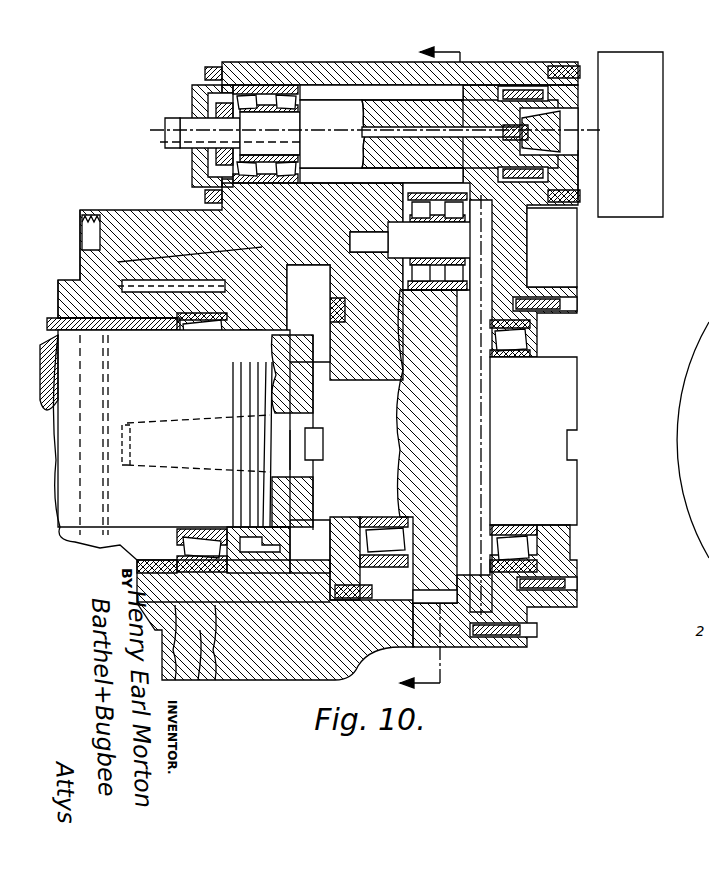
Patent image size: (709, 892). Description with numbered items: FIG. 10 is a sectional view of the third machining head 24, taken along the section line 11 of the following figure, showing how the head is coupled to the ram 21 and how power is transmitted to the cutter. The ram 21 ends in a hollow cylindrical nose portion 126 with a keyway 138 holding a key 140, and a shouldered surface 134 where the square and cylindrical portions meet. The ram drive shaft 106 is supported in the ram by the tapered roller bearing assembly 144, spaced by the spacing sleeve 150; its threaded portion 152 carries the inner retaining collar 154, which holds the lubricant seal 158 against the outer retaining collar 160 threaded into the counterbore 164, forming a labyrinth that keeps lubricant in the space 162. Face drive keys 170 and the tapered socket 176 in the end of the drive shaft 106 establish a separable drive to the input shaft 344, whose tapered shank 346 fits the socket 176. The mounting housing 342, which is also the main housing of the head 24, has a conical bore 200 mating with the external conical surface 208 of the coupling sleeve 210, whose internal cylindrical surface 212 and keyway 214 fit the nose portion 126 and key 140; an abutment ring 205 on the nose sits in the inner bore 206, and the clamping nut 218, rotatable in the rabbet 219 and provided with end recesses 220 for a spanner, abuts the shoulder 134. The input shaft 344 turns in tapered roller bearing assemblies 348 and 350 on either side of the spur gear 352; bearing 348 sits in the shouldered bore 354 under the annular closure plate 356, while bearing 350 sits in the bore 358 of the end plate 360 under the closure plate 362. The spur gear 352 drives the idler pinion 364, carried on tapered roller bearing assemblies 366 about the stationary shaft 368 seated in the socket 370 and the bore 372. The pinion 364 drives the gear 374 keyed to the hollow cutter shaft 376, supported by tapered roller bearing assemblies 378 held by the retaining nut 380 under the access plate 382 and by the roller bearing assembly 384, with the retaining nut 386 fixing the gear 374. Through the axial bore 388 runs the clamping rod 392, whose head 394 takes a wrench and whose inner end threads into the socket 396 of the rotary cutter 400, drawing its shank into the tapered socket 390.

The section line 11— 11 is at (421, 367).
The ram 21 is at (56, 300).
The third machining head 24 is at (100, 210).
The drive shaft 106 is at (55, 540).
The nose portion 126 is at (295, 330).
The shouldered surface 134 is at (80, 442).
The keyway groove 138 is at (140, 260).
The key 140 is at (150, 280).
The tapered roller bearing assembly 144 is at (183, 336).
The spacing sleeve 150 is at (120, 330).
The threaded portion 152 is at (236, 494).
The inner retaining collar 154 is at (240, 370).
The lubricant seal 158 is at (290, 337).
The outer retaining collar 160 is at (298, 560).
The lubricant space 162 is at (173, 551).
The threaded counterbore 164 is at (282, 555).
The face drive keys 170 is at (323, 440).
The tapered socket 176 is at (163, 420).
The conical bore 200 is at (178, 262).
The abutment ring 205 is at (250, 628).
The inner bore 206 is at (335, 591).
The external conical surface 208 is at (180, 682).
The coupling sleeve 210 is at (220, 682).
The internal cylindrical surface 212 is at (205, 682).
The keyway 214 is at (96, 330).
The clamping nut 218 is at (82, 236).
The rabbet 219 is at (92, 284).
The end recesses 220 is at (82, 240).
The mounting housing 342 is at (265, 683).
The input shaft 344 is at (404, 446).
The tapered shank 346 is at (313, 465).
The tapered roller bearing assembly 348 is at (386, 372).
The tapered roller bearing assembly 350 is at (522, 360).
The spur gear 352 is at (455, 640).
The shouldered bore 354 is at (342, 595).
The annular closure plate 356 is at (330, 342).
The bore 358 is at (530, 610).
The end plate 360 is at (530, 275).
The annular closure plate 362 is at (570, 335).
The idler pinion 364 is at (527, 215).
The tapered roller bearing assemblies 366 is at (412, 236).
The stationary shaft 368 is at (527, 250).
The socket 370 is at (380, 192).
The bore 372 is at (560, 240).
The gear 374 is at (450, 85).
The cutter shaft 376 is at (311, 80).
The tapered roller bearing assemblies 378 is at (266, 134).
The retaining nut 380 is at (212, 108).
The access plate 382 is at (207, 165).
The roller bearing assembly 384 is at (548, 104).
The retaining nut 386 is at (348, 96).
The axial bore 388 is at (429, 134).
The tapered socket 390 is at (578, 160).
The clamping rod 392 is at (560, 131).
The head 394 is at (165, 133).
The threaded socket 396 is at (528, 120).
The rotary cutter 400 is at (663, 96).